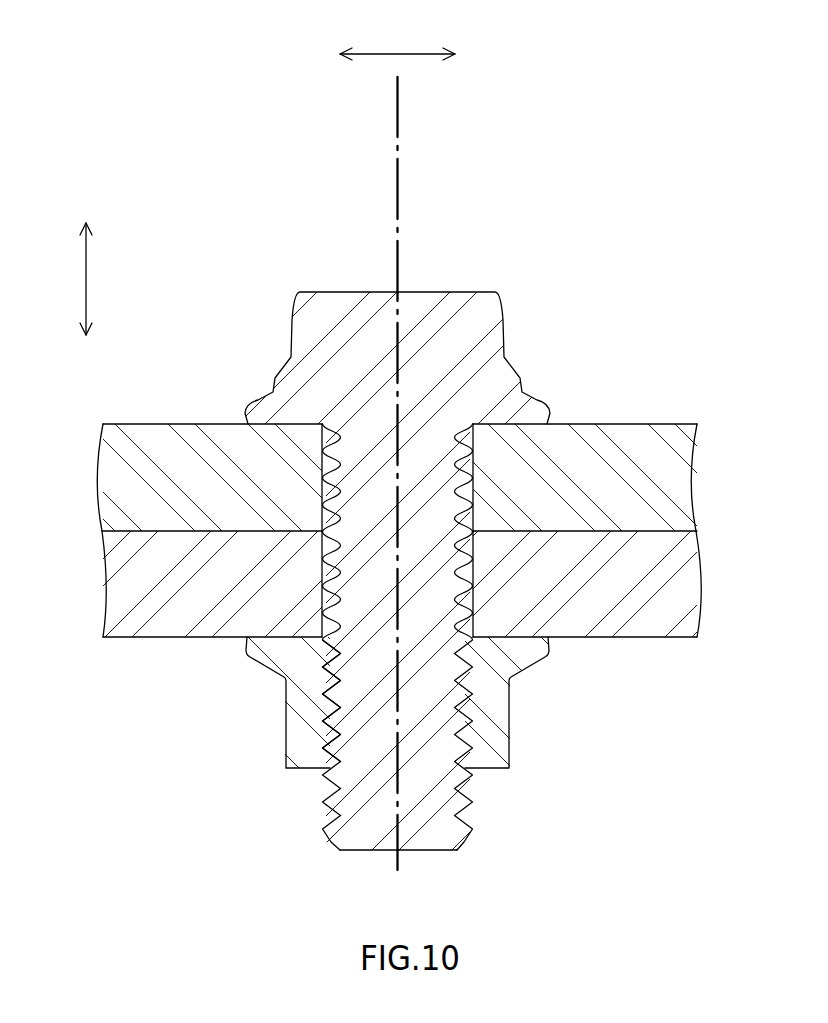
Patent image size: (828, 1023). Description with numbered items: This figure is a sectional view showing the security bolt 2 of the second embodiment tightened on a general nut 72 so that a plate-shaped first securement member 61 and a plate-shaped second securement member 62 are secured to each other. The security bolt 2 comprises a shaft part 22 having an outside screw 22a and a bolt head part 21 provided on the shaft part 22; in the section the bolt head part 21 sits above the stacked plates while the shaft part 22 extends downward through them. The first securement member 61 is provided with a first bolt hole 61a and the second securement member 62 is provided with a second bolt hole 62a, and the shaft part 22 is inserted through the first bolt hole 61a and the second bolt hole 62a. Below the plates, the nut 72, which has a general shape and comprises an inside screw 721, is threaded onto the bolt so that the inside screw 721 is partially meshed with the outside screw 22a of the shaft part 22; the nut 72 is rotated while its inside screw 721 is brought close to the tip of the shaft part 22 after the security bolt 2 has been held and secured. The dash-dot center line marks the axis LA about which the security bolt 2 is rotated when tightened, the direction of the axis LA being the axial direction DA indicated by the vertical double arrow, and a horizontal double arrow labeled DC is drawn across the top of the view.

The security bolt 2 is at (405, 573).
The bolt head part 21 is at (323, 322).
The shaft part 22 is at (421, 602).
The outside screw 22a is at (476, 713).
The first securement member 61 is at (397, 432).
The first bolt hole 61a is at (466, 430).
The second securement member 62 is at (401, 634).
The second bolt hole 62a is at (465, 630).
The nut 72 is at (383, 743).
The inside screw 721 is at (333, 717).
The axis LA is at (398, 97).
The radial direction DC is at (397, 38).
The axial direction DA is at (64, 279).